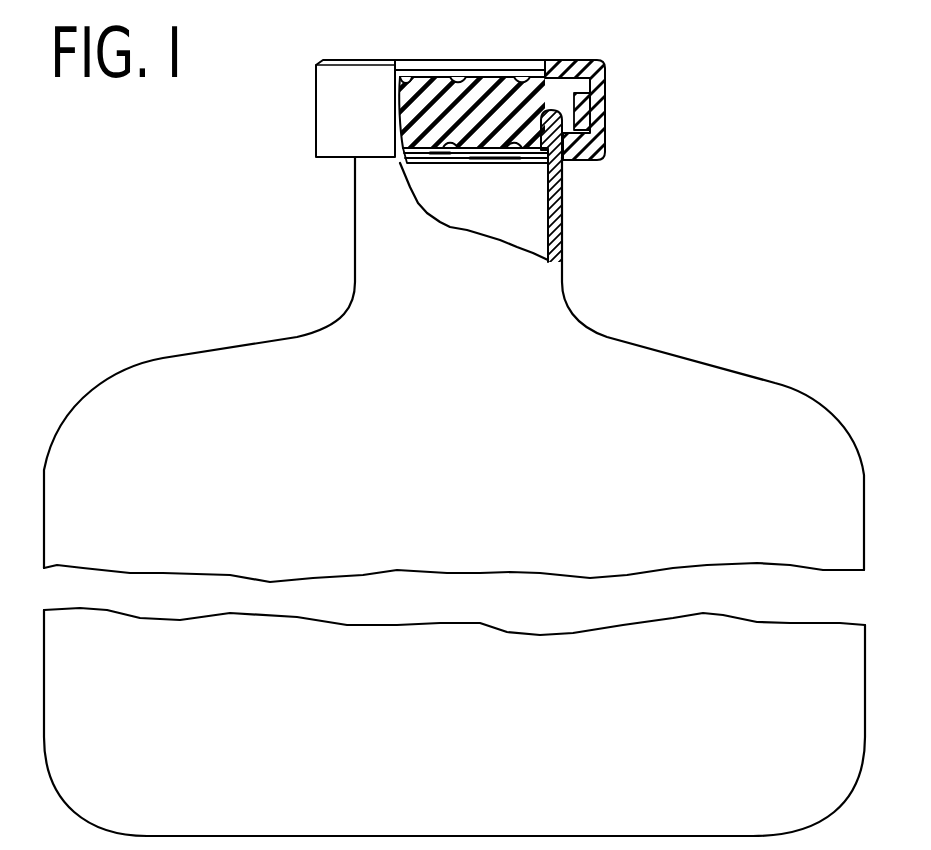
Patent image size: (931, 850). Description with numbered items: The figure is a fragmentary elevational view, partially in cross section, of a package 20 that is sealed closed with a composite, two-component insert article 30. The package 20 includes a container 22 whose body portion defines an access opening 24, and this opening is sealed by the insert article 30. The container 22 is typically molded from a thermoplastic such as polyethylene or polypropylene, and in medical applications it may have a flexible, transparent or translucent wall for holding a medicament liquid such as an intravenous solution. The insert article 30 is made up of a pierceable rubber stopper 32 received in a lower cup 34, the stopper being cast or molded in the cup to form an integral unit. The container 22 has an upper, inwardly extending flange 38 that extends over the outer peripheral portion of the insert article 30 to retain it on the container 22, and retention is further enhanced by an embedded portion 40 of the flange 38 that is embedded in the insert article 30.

The package 20 is at (454, 496).
The container 22 is at (694, 358).
The access opening 24 is at (552, 182).
The insert article 30 is at (446, 178).
The pierceable rubber stopper 32 is at (498, 90).
The lower cup 34 is at (485, 168).
The flange 38 is at (563, 72).
The embedded portion 40 is at (576, 101).